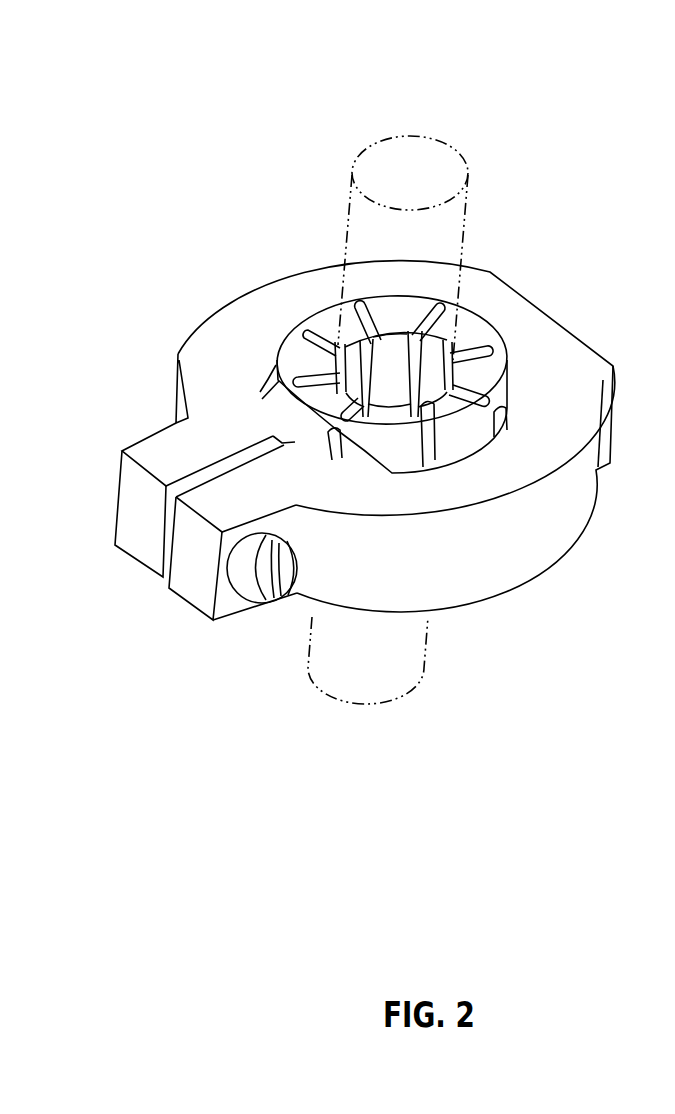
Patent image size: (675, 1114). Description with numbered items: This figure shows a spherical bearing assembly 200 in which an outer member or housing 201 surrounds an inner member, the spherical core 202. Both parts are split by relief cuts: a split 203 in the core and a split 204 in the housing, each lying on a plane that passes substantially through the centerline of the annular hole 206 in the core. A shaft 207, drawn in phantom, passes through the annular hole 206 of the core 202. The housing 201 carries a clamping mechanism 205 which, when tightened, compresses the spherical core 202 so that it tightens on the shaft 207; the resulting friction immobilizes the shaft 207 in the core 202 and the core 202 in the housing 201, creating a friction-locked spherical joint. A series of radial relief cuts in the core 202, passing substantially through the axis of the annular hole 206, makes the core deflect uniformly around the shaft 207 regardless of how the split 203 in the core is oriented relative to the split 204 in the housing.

The spherical bearing assembly 200 is at (228, 140).
The outer member or housing 201 is at (240, 320).
The spherical core 202 is at (472, 328).
The split in the core 203 is at (428, 452).
The split in the housing 204 is at (168, 553).
The clamping mechanism 205 is at (262, 582).
The annular hole 206 is at (395, 368).
The shaft 207 is at (463, 230).